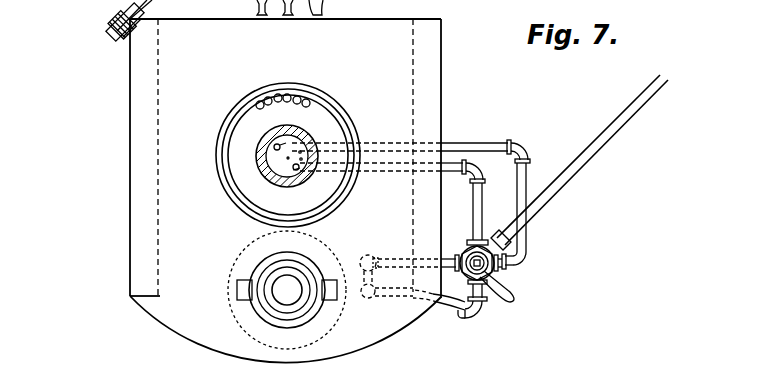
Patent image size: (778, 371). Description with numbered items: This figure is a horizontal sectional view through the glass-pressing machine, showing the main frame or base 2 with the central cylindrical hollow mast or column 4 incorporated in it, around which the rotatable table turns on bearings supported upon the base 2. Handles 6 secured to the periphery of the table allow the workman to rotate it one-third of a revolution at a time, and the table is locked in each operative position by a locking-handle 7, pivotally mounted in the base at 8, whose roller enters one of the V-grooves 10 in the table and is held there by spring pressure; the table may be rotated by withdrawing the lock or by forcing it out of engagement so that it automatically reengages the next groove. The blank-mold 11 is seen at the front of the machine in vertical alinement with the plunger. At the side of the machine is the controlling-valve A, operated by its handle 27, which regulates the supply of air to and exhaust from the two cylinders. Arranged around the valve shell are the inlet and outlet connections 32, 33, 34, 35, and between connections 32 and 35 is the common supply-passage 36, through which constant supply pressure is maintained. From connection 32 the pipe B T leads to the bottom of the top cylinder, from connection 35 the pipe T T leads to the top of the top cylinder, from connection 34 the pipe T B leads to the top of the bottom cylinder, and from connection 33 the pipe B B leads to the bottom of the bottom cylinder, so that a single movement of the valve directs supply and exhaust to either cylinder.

The main frame or base 2 is at (285, 181).
The central cylindrical hollow mast or column 4 is at (258, 146).
The handles 6 is at (323, 6).
The locking-handle 7 is at (101, 18).
The pivot of locking-handle 8 is at (112, 30).
The V-grooves 10 is at (249, 7).
The blank-mold 11 is at (295, 283).
The handle 27 is at (509, 303).
The valve connection 32 is at (532, 266).
The valve connection 33 is at (478, 318).
The valve connection 34 is at (434, 258).
The valve connection 35 is at (478, 238).
The common supply-passage 36 is at (518, 238).
The controlling-valve A is at (490, 273).
The pipe B T BT is at (283, 124).
The pipe T T TT is at (290, 202).
The pipe T B TB is at (447, 258).
The pipe B B BB is at (456, 313).